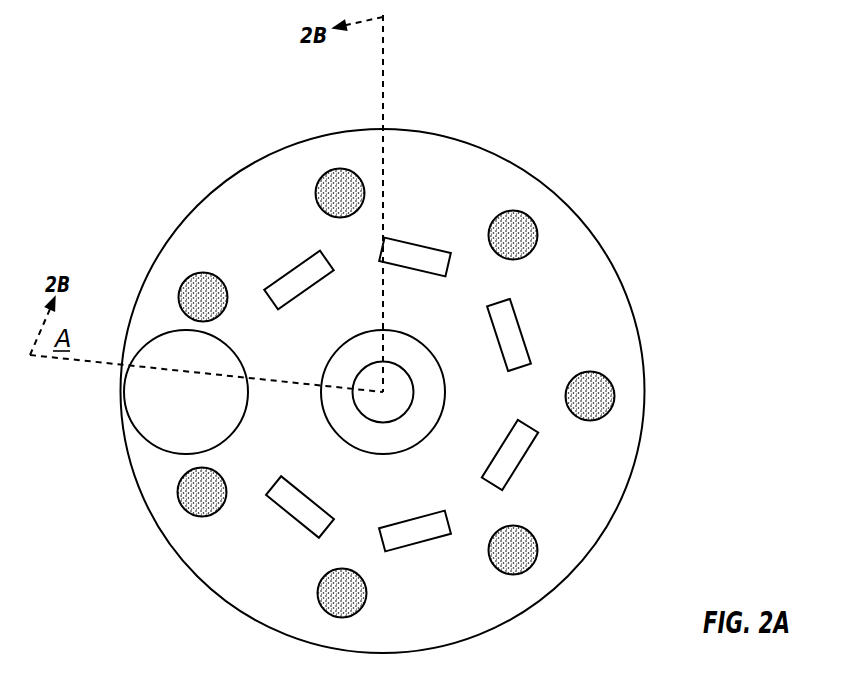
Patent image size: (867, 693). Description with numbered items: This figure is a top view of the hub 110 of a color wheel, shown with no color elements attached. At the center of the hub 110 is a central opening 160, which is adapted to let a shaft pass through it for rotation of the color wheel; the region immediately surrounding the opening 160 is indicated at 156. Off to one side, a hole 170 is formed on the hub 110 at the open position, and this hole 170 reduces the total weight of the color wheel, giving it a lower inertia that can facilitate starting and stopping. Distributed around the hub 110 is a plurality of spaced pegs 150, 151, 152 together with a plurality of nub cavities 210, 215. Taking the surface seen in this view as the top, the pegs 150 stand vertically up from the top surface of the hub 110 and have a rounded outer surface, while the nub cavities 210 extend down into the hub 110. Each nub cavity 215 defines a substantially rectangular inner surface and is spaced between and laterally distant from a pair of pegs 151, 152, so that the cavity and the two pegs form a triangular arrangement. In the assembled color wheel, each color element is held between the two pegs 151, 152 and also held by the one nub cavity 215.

The hub 110 is at (87, 114).
The peg 150 is at (635, 385).
The peg 151 is at (305, 168).
The peg 152 is at (159, 290).
The central hub 156 is at (359, 392).
The central opening 160 is at (410, 364).
The hole 170 is at (207, 408).
The nub cavity 210 is at (542, 455).
The nub cavity 215 is at (286, 273).